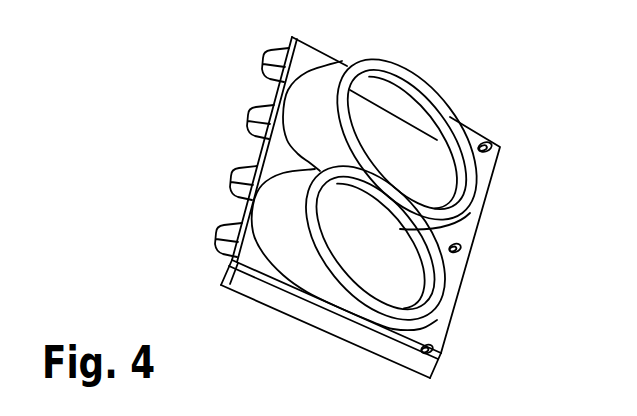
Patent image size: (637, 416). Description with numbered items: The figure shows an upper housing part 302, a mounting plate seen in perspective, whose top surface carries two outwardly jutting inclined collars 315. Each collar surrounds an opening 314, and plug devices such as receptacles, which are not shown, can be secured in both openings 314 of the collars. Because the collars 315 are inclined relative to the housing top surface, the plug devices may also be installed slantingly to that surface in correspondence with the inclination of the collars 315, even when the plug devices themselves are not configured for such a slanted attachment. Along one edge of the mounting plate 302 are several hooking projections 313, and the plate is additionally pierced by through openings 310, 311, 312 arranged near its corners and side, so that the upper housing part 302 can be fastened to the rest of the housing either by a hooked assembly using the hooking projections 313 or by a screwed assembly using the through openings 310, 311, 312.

The upper housing part 302 is at (147, 162).
The through opening 310 is at (493, 147).
The through opening 311 is at (463, 248).
The through opening 312 is at (436, 348).
The hooking projections 313 is at (265, 58).
The openings 314 is at (432, 160).
The inclined collars 315 is at (336, 70).